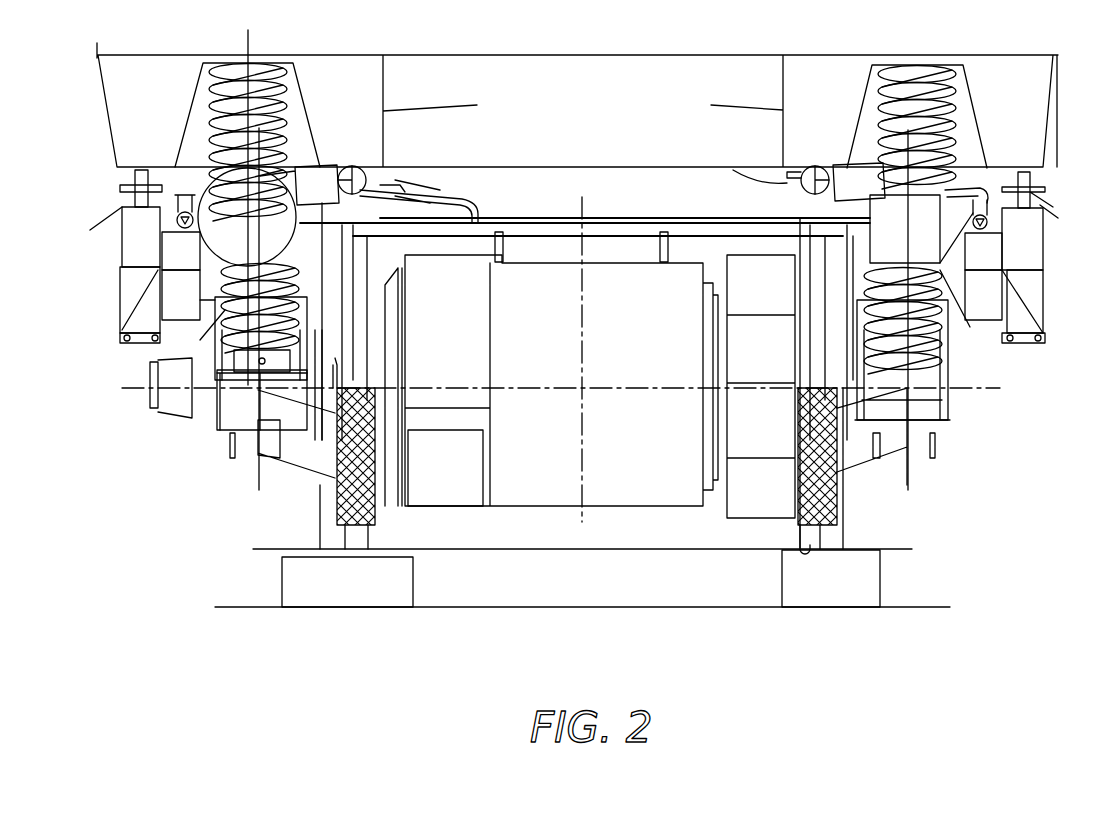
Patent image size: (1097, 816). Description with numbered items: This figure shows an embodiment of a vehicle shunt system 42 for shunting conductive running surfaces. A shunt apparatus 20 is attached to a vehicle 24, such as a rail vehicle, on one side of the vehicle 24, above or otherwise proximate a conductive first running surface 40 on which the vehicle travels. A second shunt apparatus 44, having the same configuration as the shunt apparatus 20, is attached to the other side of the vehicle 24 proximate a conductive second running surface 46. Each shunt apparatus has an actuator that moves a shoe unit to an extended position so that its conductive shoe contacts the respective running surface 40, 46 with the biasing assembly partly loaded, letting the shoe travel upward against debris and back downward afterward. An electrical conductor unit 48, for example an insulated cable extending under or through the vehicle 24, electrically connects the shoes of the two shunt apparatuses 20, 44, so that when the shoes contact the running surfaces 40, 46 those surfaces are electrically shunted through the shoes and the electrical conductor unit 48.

The vehicle 24 is at (535, 62).
The electrical conductor unit 48 is at (600, 238).
The shunt apparatus 20 is at (345, 507).
The second shunt apparatus 44 is at (822, 510).
The first running surface 40 is at (381, 557).
The second running surface 46 is at (837, 550).
The system 42 is at (213, 497).